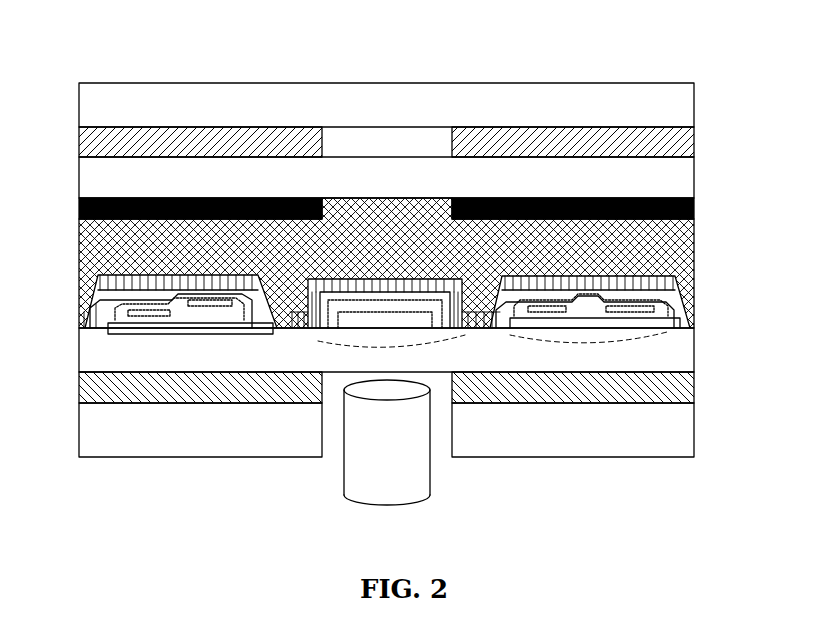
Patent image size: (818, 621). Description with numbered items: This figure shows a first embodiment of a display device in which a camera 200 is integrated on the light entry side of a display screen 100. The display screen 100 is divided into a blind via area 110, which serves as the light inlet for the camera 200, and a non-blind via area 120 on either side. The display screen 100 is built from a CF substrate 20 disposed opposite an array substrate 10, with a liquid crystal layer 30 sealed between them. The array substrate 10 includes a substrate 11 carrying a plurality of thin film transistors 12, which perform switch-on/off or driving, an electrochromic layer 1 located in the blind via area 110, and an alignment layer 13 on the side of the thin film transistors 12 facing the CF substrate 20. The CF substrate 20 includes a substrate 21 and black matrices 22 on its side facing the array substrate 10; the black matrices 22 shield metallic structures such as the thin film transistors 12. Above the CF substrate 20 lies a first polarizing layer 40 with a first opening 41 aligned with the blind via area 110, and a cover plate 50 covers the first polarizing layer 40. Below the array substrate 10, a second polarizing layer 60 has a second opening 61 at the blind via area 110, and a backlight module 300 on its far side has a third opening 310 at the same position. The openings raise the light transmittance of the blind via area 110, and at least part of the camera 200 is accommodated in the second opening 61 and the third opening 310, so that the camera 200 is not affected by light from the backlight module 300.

The electrochromic layer 1 is at (355, 342).
The array substrate 10 is at (771, 250).
The substrate 11 is at (680, 358).
The thin film transistor 12 is at (678, 287).
The alignment layer 13 is at (663, 272).
The CF substrate 20 is at (771, 165).
The substrate 21 is at (680, 188).
The black matrix 22 is at (695, 203).
The liquid crystal layer 30 is at (247, 302).
The first polarizing layer 40 is at (694, 136).
The first opening 41 is at (362, 148).
The cover plate 50 is at (680, 107).
The second polarizing layer 60 is at (695, 390).
The second opening 61 is at (452, 397).
The display screen 100 is at (74, 90).
The blind via area 110 is at (452, 55).
The non-blind via area 120 is at (694, 83).
The camera 200 is at (372, 474).
The backlight module 300 is at (680, 445).
The third opening 310 is at (452, 430).